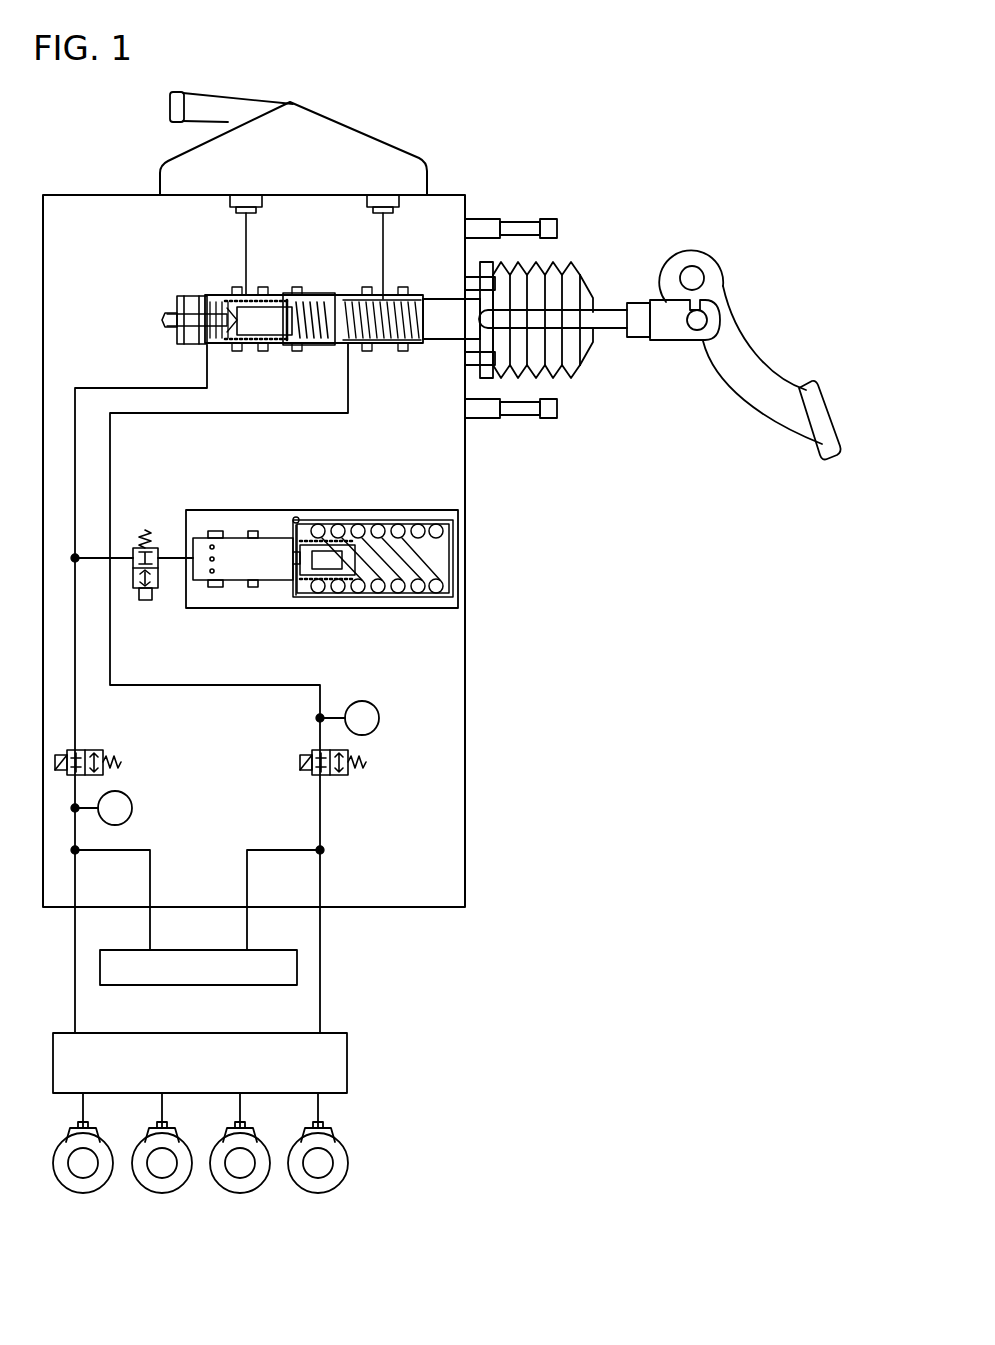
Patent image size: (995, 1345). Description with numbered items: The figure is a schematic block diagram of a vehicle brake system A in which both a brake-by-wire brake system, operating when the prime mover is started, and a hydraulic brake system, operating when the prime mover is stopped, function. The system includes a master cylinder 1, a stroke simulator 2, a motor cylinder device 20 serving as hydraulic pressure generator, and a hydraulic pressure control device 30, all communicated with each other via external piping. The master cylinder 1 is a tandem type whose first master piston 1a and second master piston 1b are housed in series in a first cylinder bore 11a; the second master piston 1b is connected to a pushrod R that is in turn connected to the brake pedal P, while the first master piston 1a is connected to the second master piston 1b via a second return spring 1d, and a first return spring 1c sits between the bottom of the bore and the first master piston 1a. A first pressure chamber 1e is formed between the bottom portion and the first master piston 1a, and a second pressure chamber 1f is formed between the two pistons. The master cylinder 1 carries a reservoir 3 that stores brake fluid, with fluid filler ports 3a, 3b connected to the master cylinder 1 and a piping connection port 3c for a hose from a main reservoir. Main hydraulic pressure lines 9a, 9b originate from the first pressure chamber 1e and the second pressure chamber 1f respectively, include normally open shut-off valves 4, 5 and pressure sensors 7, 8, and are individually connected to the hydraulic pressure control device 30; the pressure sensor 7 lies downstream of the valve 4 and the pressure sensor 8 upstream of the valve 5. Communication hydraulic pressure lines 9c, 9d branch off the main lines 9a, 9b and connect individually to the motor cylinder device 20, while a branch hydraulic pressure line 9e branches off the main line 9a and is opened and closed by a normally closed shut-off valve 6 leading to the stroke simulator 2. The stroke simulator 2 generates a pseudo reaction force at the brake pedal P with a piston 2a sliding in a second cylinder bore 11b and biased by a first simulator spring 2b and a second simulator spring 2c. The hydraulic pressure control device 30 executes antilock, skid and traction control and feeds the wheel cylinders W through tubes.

The vehicle brake system A is at (518, 133).
The master cylinder 1 is at (96, 190).
The first master piston 1a is at (297, 340).
The second master piston 1b is at (438, 334).
The first return spring 1c is at (195, 346).
The second return spring 1d is at (340, 350).
The first pressure chamber 1e is at (203, 296).
The second pressure chamber 1f is at (338, 294).
The first cylinder bore 11a is at (292, 292).
The second cylinder bore 11b is at (378, 520).
The stroke simulator 2 is at (418, 612).
The piston 2a is at (280, 580).
The first simulator spring 2b is at (383, 592).
The second simulator spring 2c is at (305, 595).
The reservoir 3 is at (372, 119).
The fluid filler port 3a is at (240, 215).
The fluid filler port 3b is at (375, 215).
The piping connection port 3c is at (255, 93).
The normally open shut-off valve 4 is at (100, 746).
The normally open shut-off valve 5 is at (333, 777).
The normally closed shut-off valve 6 is at (158, 588).
The pressure sensor 7 is at (101, 808).
The pressure sensor 8 is at (347, 718).
The main hydraulic pressure line 9a is at (80, 694).
The main hydraulic pressure line 9b is at (318, 700).
The communication hydraulic pressure line 9c is at (150, 858).
The communication hydraulic pressure line 9d is at (280, 848).
The branch hydraulic pressure line 9e is at (108, 558).
The motor cylinder device 20 is at (260, 986).
The hydraulic pressure control device 30 is at (347, 1073).
The pushrod R is at (617, 328).
The brake pedal P is at (812, 442).
The wheel cylinder W is at (335, 1122).